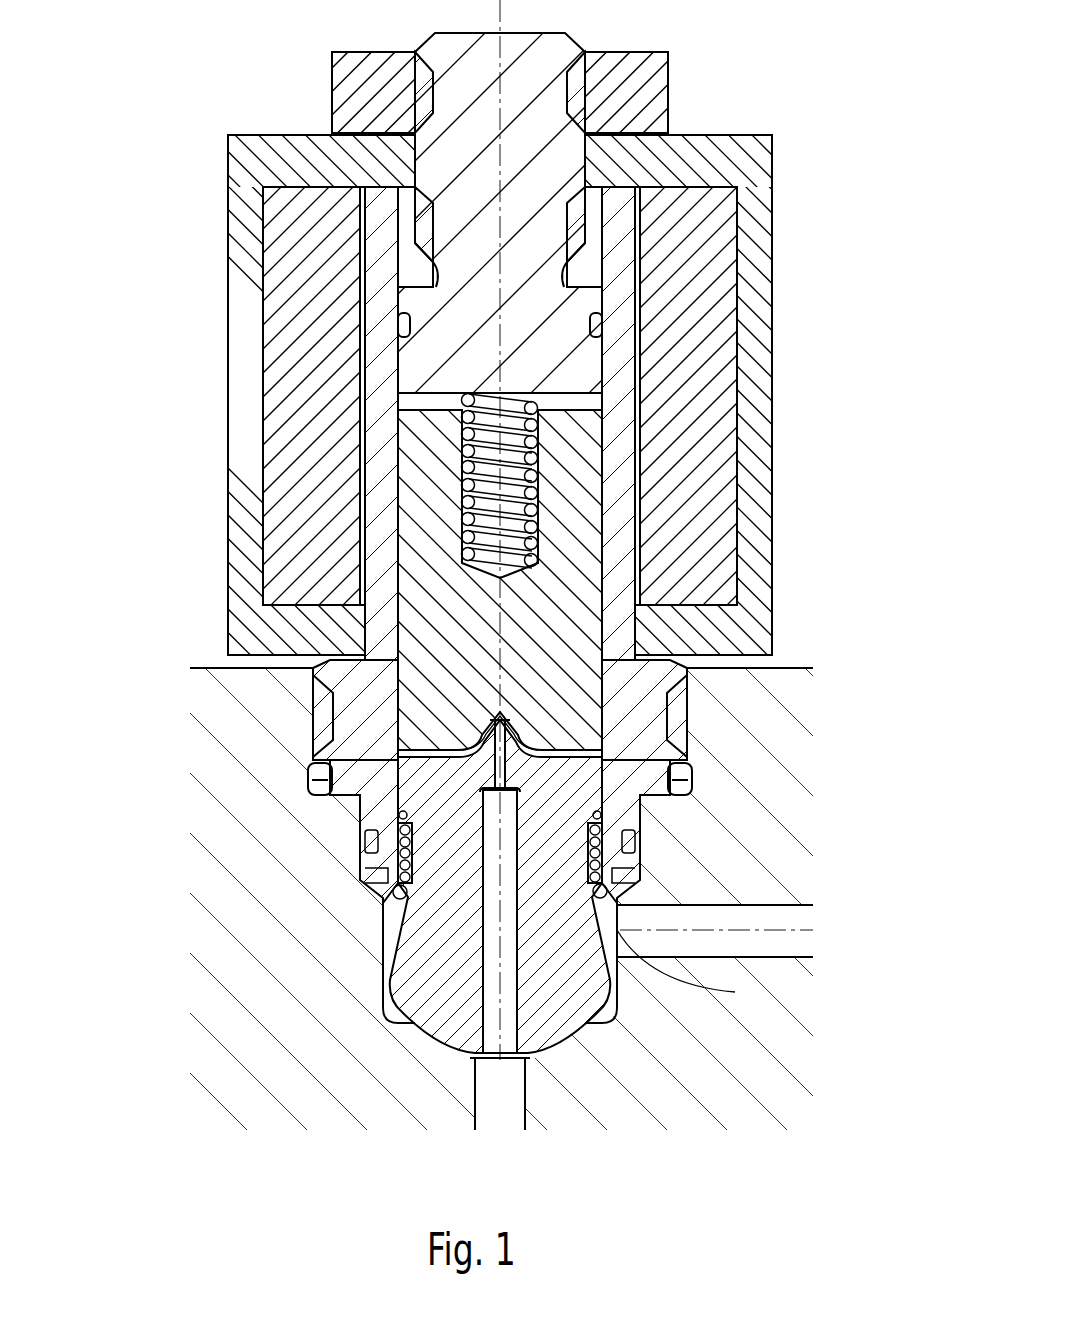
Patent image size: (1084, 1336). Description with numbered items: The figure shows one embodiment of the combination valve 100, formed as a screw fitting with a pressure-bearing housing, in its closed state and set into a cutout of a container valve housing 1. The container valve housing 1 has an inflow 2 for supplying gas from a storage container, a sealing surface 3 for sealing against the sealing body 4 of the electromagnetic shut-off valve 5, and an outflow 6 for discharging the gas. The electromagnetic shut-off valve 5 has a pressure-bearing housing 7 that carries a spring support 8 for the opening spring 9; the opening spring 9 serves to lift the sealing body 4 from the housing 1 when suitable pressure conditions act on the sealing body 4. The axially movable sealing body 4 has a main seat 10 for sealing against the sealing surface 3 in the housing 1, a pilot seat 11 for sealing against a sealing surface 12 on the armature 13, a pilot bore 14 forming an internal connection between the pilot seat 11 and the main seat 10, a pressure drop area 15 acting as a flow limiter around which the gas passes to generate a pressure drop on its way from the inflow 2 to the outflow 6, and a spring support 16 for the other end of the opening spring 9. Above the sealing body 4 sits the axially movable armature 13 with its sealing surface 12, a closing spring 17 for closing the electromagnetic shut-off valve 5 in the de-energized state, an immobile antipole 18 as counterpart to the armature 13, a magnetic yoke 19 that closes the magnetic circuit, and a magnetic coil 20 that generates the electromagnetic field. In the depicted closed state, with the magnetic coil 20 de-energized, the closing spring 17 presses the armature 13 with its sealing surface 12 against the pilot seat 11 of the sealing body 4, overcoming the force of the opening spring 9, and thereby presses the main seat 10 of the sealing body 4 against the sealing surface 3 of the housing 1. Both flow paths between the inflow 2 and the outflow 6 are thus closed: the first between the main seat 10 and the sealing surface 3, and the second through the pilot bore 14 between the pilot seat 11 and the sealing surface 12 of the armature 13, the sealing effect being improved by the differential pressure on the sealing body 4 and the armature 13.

The container valve housing 1 is at (730, 1098).
The inflow 2 is at (792, 918).
The sealing surface 3 is at (533, 1053).
The sealing body 4 is at (418, 957).
The electromagnetic shut-off valve 5 is at (818, 234).
The outflow 6 is at (495, 1108).
The pressure-bearing housing 7 is at (627, 575).
The spring support 8 is at (397, 892).
The opening spring 9 is at (603, 863).
The main seat 10 is at (403, 1013).
The pilot seat 11 is at (495, 760).
The sealing surface 12 is at (520, 722).
The armature 13 is at (425, 622).
The pilot bore 14 is at (487, 843).
The pressure drop area 15 is at (645, 945).
The spring support 16 is at (600, 805).
The closing spring 17 is at (540, 466).
The antipole 18 is at (583, 363).
The magnetic yoke 19 is at (243, 493).
The magnetic coil 20 is at (300, 250).
The combination valve 100 is at (130, 101).